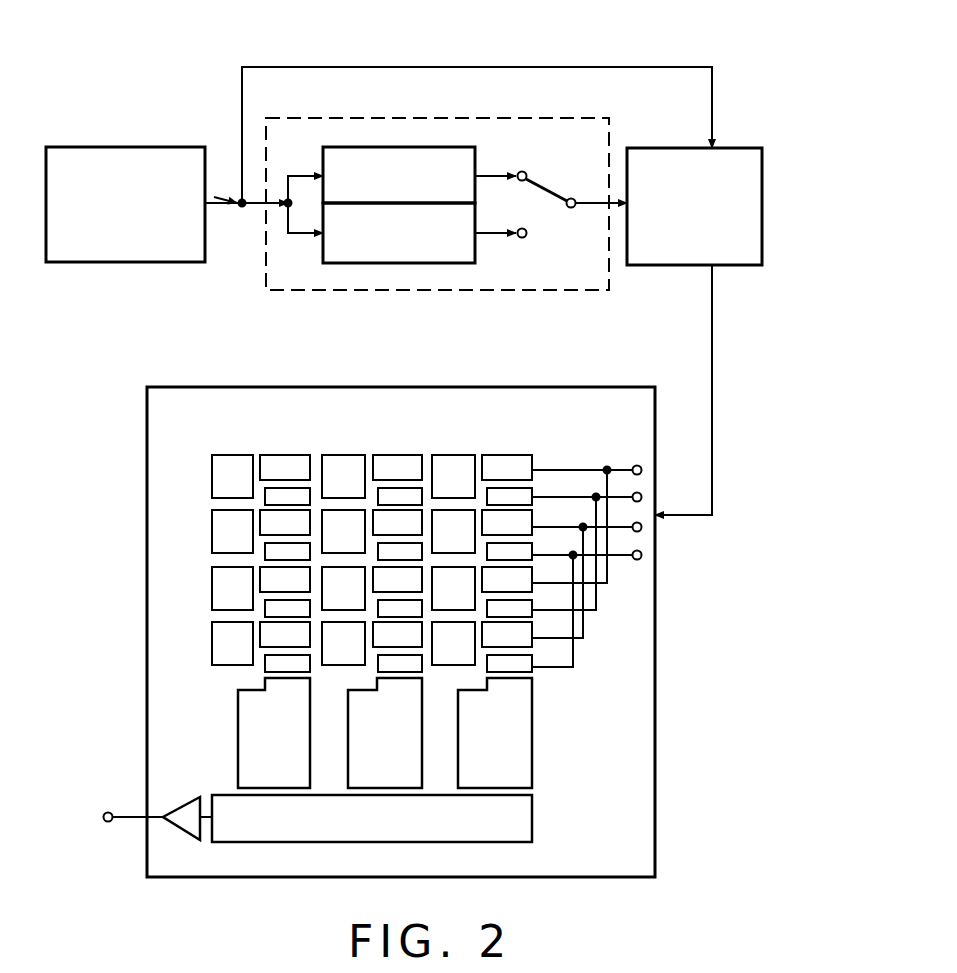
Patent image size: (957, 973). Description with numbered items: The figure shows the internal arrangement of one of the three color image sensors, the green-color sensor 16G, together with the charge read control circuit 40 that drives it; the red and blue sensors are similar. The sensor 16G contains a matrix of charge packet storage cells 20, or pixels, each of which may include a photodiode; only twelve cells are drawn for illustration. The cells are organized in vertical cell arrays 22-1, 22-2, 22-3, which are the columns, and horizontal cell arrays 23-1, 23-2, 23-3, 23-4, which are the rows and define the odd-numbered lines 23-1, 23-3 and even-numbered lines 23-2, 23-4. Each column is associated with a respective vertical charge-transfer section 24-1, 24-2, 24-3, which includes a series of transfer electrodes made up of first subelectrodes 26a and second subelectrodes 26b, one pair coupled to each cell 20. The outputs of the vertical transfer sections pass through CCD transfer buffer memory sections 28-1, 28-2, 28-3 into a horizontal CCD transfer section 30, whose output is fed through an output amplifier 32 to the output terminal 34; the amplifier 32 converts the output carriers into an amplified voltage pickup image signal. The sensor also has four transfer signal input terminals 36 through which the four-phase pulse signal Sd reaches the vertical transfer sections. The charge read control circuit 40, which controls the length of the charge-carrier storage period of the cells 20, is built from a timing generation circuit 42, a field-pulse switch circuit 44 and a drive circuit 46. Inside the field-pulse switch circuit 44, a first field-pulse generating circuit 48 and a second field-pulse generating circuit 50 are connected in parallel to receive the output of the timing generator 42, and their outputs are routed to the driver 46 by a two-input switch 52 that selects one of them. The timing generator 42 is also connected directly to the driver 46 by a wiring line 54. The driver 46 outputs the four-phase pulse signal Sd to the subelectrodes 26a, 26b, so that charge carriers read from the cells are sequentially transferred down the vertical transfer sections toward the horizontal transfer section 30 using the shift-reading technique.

The green-color image sensor 16G is at (424, 387).
The charge packet storage cell 20 is at (222, 530).
The vertical cell array 22-1 is at (220, 455).
The vertical cell array 22-2 is at (332, 455).
The vertical cell array 22-3 is at (455, 455).
The horizontal cell array 23-1 is at (188, 490).
The horizontal cell array 23-2 is at (192, 545).
The horizontal cell array 23-3 is at (192, 600).
The horizontal cell array 23-4 is at (192, 650).
The vertical charge-transfer section 24-1 is at (270, 455).
The vertical charge-transfer section 24-2 is at (395, 455).
The vertical charge-transfer section 24-3 is at (520, 455).
The first subelectrode 26a is at (298, 465).
The second subelectrode 26b is at (265, 495).
The CCD transfer buffer memory section 28-1 is at (244, 741).
The CCD transfer buffer memory section 28-2 is at (415, 766).
The CCD transfer buffer memory section 28-3 is at (532, 741).
The horizontal CCD transfer section 30 is at (532, 830).
The output amplifier 32 is at (190, 816).
The output terminal 34 is at (108, 812).
The transfer signal input terminals 36 is at (642, 496).
The charge read control circuit 40 is at (240, 107).
The timing generation circuit 42 is at (78, 147).
The field-pulse switch circuit 44 is at (408, 118).
The drive circuit 46 is at (762, 237).
The first field-pulse generating circuit 48 is at (323, 147).
The second field-pulse generating circuit 50 is at (323, 263).
The two-input switch 52 is at (552, 228).
The wiring line 54 is at (638, 67).
The four-phase pulse signal Sd is at (712, 483).